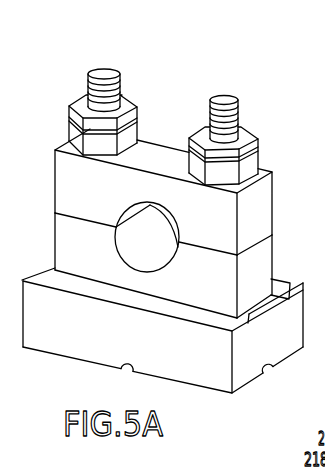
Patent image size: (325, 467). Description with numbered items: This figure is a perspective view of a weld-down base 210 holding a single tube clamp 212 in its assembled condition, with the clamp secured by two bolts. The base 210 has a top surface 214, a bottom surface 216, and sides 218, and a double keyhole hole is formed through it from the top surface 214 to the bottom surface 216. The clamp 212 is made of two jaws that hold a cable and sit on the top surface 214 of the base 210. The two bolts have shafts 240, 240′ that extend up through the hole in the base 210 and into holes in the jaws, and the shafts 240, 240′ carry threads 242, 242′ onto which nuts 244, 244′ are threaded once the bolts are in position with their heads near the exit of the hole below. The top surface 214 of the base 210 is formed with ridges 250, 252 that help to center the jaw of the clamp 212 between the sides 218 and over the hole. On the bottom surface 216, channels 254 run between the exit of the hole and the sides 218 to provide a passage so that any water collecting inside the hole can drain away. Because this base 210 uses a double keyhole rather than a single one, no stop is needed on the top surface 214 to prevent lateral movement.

The base 210 is at (172, 250).
The clamp 212 is at (51, 182).
The top surface 214 is at (48, 272).
The bottom surface 216 is at (231, 394).
The sides 218 is at (173, 342).
The shaft 240 is at (84, 99).
The shaft 240′ is at (247, 122).
The threads 242 is at (89, 92).
The threads 242′ is at (240, 119).
The nut 244 is at (74, 139).
The nut 244′ is at (252, 168).
The ridge 250 is at (222, 322).
The ridge 252 is at (283, 283).
The channels 254 is at (120, 372).